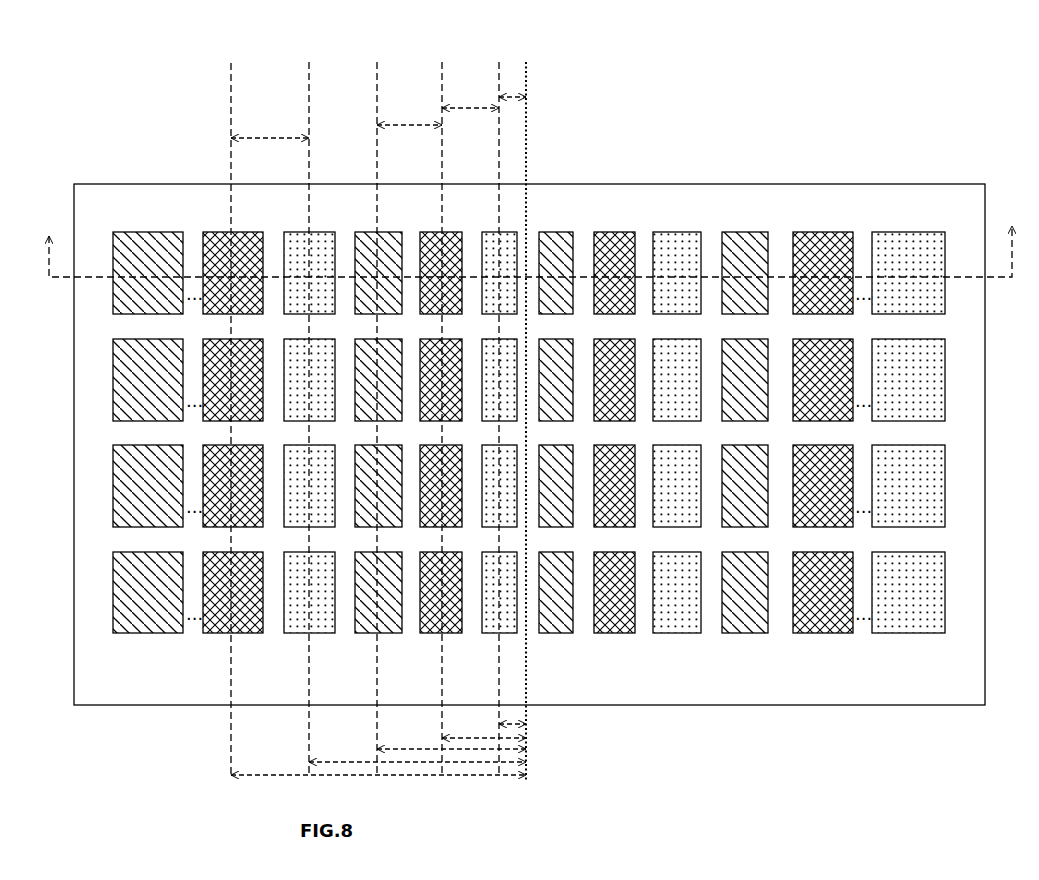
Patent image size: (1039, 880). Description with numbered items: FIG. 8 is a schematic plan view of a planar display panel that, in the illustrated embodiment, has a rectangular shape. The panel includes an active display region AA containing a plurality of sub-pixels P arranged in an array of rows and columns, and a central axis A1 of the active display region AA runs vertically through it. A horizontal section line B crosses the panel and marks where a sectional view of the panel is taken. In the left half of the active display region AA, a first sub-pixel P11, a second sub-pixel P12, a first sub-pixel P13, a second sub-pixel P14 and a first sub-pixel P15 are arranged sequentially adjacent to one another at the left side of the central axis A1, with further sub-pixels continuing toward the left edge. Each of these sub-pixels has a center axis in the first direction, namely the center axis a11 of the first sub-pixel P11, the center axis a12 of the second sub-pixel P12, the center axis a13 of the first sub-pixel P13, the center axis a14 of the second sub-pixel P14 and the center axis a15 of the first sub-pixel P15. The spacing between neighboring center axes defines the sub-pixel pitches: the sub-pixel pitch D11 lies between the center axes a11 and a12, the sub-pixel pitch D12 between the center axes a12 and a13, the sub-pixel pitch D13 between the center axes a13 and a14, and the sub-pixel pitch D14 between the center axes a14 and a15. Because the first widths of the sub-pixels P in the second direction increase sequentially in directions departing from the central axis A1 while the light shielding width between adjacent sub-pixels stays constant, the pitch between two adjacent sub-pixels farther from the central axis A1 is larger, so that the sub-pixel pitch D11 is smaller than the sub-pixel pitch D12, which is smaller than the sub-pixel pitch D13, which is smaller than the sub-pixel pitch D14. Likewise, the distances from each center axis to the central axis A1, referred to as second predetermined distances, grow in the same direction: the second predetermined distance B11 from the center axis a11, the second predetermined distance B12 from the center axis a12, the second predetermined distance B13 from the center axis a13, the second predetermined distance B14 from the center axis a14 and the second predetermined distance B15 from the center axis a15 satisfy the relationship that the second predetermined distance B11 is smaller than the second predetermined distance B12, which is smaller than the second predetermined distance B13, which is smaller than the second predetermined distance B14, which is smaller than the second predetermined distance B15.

The active display region AA is at (687, 692).
The sub-pixel P is at (147, 230).
The first sub-pixel P11 is at (502, 232).
The second sub-pixel P12 is at (450, 232).
The first sub-pixel P13 is at (393, 232).
The second sub-pixel P14 is at (322, 232).
The first sub-pixel P15 is at (223, 232).
The center axis of first sub-pixel P11 a11 is at (492, 407).
The center axis of second sub-pixel P12 a12 is at (444, 407).
The center axis of first sub-pixel P13 a13 is at (383, 407).
The center axis of second sub-pixel P14 a14 is at (316, 407).
The center axis of first sub-pixel P15 a15 is at (235, 410).
The central axis A1 is at (527, 73).
The sub-pixel pitch D11 is at (491, 86).
The sub-pixel pitch D12 is at (444, 94).
The sub-pixel pitch D13 is at (387, 111).
The sub-pixel pitch D14 is at (270, 122).
The second predetermined distance B11 is at (516, 713).
The second predetermined distance B12 is at (484, 725).
The second predetermined distance B13 is at (451, 738).
The second predetermined distance B14 is at (417, 751).
The second predetermined distance B15 is at (378, 763).
The section line BB B is at (530, 239).